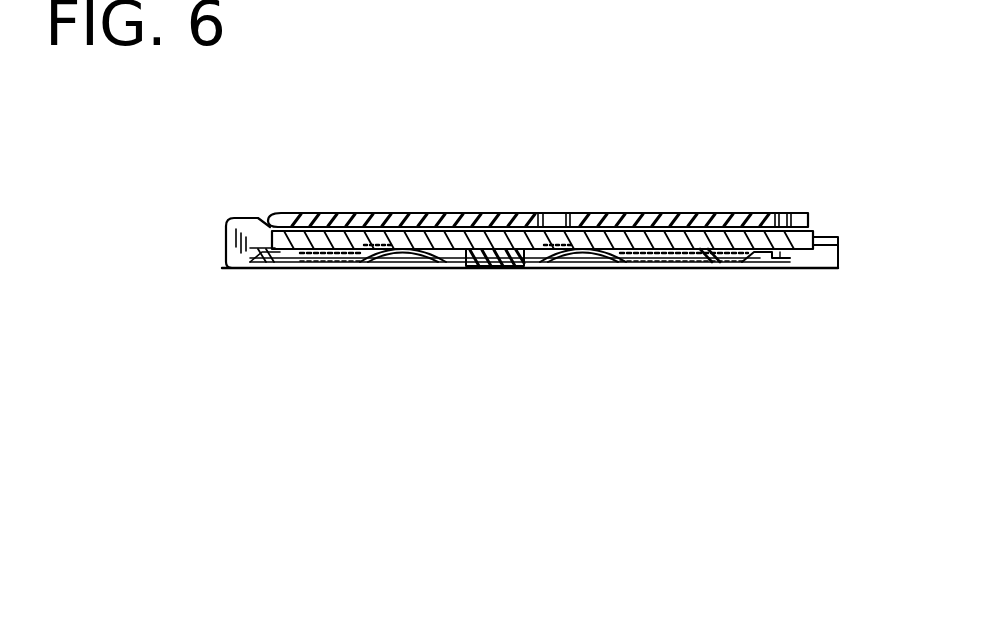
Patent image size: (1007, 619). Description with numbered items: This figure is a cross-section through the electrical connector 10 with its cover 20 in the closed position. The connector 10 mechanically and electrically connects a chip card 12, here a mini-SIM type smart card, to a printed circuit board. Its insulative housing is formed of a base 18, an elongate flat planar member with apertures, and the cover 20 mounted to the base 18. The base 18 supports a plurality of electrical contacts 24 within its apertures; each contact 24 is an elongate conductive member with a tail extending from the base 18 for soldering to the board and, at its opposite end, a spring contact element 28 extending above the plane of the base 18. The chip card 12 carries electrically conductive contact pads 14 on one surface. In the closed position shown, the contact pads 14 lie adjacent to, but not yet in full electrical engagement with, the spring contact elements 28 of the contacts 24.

The electrical connector 10 is at (806, 165).
The chip card 12 is at (803, 238).
The contact pads 14 is at (366, 245).
The base 18 is at (487, 266).
The cover 20 is at (511, 213).
The electrical contacts 24 is at (689, 266).
The spring contact elements 28 is at (418, 242).